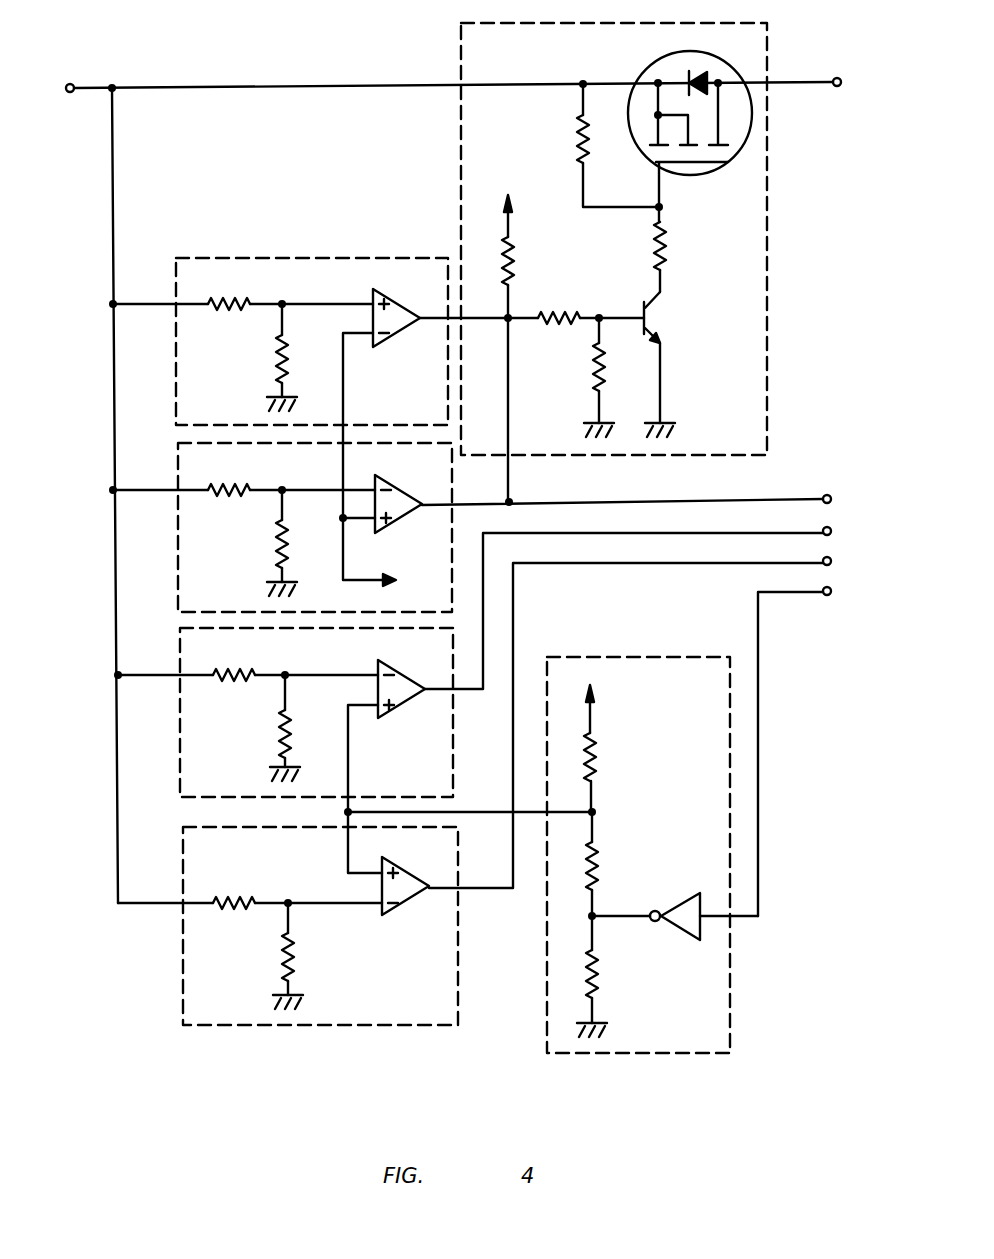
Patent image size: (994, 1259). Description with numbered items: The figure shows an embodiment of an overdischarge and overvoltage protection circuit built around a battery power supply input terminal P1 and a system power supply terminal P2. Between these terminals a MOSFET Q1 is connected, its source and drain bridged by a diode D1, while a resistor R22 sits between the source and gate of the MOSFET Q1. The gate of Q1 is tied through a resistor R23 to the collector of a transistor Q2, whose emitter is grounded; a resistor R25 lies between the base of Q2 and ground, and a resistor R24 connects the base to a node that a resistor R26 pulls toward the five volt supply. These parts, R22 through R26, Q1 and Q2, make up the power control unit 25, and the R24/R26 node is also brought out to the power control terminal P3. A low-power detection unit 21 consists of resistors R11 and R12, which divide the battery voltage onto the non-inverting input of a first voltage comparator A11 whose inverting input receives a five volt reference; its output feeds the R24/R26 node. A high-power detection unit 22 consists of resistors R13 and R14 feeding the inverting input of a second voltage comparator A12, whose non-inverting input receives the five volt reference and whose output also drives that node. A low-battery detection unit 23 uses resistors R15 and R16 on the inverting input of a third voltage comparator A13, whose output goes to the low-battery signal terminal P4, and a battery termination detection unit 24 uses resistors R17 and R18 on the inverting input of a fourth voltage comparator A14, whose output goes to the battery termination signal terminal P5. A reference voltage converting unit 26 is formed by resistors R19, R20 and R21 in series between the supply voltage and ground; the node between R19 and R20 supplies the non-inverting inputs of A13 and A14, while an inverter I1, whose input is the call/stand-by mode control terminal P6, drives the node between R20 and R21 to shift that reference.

The low-power detection unit 21 is at (273, 257).
The high-power detection unit 22 is at (176, 560).
The low-battery detection unit 23 is at (178, 747).
The battery termination detection unit 24 is at (268, 1025).
The power control unit 25 is at (458, 123).
The reference voltage converting unit 26 is at (732, 968).
The resistor R11 is at (243, 293).
The resistor R12 is at (263, 357).
The resistor R13 is at (244, 478).
The resistor R14 is at (264, 543).
The resistor R15 is at (248, 663).
The resistor R16 is at (267, 728).
The resistor R17 is at (250, 891).
The resistor R18 is at (271, 956).
The resistor R19 is at (610, 739).
The resistor R20 is at (614, 865).
The resistor R21 is at (611, 976).
The resistor R22 is at (595, 145).
The resistor R23 is at (682, 249).
The resistor R24 is at (532, 307).
The resistor R25 is at (581, 377).
The resistor R26 is at (527, 339).
The first voltage comparator A11 is at (401, 347).
The second voltage comparator A12 is at (407, 487).
The third voltage comparator A13 is at (410, 669).
The fourth voltage comparator A14 is at (413, 866).
The MOSFET Q1 is at (723, 170).
The transistor Q2 is at (672, 364).
The diode D1 is at (683, 78).
The inverter I1 is at (675, 901).
The battery power supply input terminal P1 is at (55, 90).
The system power supply terminal P2 is at (854, 84).
The power control unit terminal P3 is at (642, 500).
The low-battery signal input terminal P4 is at (643, 605).
The battery termination signal input terminal P5 is at (645, 719).
The call/stand-by mode control unit input terminal P6 is at (810, 748).